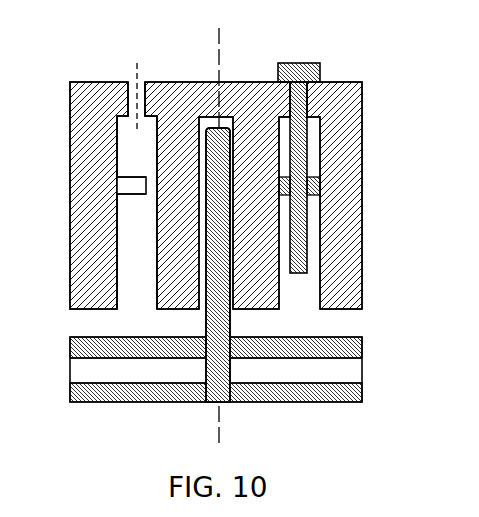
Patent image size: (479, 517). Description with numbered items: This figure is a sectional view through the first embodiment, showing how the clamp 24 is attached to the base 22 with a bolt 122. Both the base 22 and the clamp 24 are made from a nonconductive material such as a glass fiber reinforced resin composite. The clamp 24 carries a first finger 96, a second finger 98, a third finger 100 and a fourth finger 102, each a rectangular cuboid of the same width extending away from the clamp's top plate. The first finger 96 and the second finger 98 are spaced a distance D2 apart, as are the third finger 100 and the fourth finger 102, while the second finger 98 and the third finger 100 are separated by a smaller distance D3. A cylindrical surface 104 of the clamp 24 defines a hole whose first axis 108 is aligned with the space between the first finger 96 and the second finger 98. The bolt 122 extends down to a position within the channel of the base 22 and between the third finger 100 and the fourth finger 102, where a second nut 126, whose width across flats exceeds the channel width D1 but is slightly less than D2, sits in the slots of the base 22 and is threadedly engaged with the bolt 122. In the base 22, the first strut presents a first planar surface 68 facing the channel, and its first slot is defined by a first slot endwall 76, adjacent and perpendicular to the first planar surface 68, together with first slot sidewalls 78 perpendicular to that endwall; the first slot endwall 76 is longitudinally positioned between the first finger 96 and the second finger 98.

The base 22 is at (357, 348).
The clamp 24 is at (352, 82).
The first planar surface 68 is at (128, 321).
The first slot endwall 76 is at (139, 177).
The first slot sidewalls 78 is at (124, 177).
The first finger 96 is at (78, 262).
The second finger 98 is at (166, 283).
The third finger 100 is at (255, 283).
The fourth finger 102 is at (356, 276).
The cylindrical surface 104 is at (132, 81).
The first axis 108 is at (139, 68).
The bolt 122 is at (303, 63).
The second nut 126 is at (313, 178).